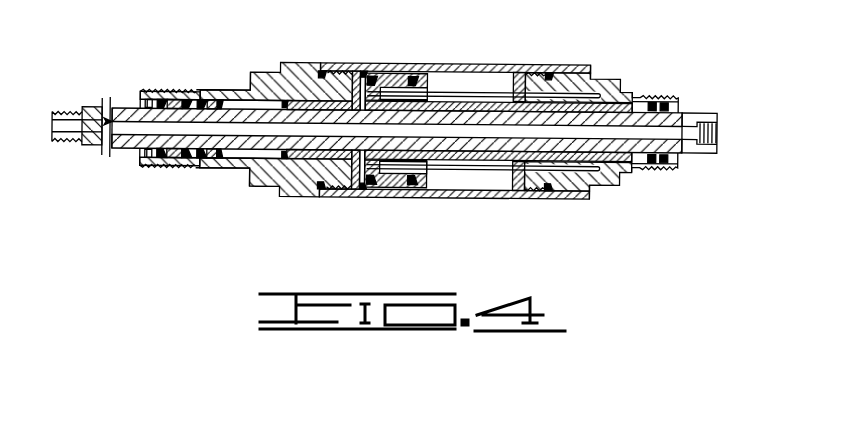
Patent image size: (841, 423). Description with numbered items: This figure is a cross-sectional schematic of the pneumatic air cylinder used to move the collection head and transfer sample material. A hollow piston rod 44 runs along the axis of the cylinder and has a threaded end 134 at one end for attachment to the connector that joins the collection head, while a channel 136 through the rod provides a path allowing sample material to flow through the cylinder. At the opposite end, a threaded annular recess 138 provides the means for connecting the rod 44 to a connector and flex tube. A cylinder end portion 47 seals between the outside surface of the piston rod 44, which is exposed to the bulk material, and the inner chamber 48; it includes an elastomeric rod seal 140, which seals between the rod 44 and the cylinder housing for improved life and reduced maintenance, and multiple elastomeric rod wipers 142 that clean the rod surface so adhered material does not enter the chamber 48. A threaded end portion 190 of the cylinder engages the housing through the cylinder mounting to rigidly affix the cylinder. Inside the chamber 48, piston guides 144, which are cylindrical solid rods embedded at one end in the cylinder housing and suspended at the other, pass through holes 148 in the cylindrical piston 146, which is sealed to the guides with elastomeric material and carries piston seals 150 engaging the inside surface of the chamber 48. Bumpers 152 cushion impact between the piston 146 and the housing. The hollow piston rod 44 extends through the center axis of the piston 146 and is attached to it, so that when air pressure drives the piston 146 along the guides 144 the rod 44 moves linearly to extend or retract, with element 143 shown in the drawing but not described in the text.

The hollow piston rod 44 is at (90, 107).
The cylinder end portion 47 is at (203, 168).
The inner chamber 48 is at (489, 82).
The threaded end 134 is at (67, 141).
The channel 136 is at (131, 130).
The threaded annular recess 138 is at (717, 124).
The elastomeric rod seal 140 is at (223, 170).
The elastomeric rod wipers 142 is at (197, 99).
The housing shoulder 143 is at (245, 88).
The piston guides 144 is at (460, 88).
The piston 146 is at (393, 198).
The holes 148 is at (375, 72).
The piston seals 150 is at (413, 70).
The bumpers 152 is at (353, 66).
The threaded end portion 190 is at (184, 165).